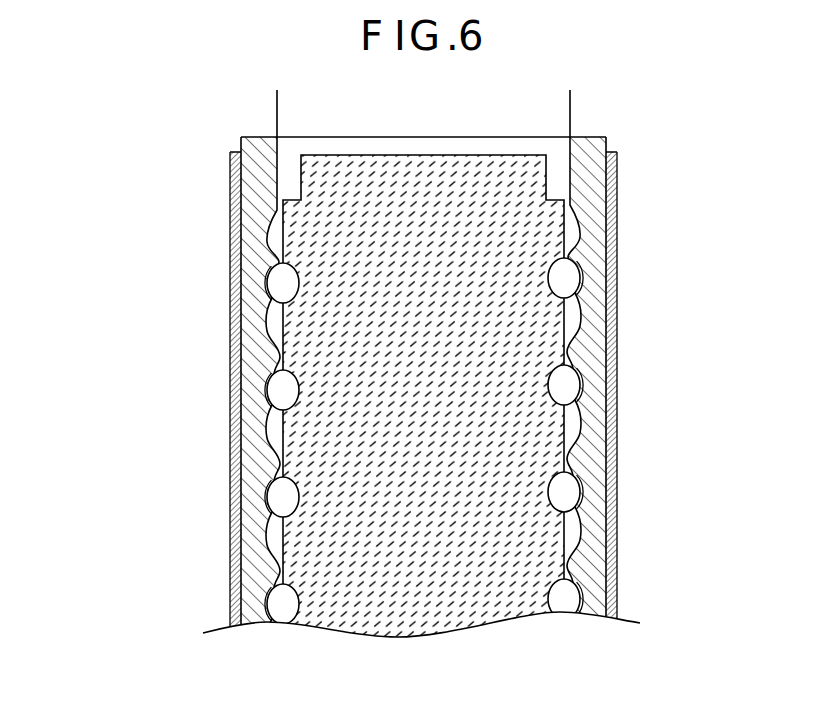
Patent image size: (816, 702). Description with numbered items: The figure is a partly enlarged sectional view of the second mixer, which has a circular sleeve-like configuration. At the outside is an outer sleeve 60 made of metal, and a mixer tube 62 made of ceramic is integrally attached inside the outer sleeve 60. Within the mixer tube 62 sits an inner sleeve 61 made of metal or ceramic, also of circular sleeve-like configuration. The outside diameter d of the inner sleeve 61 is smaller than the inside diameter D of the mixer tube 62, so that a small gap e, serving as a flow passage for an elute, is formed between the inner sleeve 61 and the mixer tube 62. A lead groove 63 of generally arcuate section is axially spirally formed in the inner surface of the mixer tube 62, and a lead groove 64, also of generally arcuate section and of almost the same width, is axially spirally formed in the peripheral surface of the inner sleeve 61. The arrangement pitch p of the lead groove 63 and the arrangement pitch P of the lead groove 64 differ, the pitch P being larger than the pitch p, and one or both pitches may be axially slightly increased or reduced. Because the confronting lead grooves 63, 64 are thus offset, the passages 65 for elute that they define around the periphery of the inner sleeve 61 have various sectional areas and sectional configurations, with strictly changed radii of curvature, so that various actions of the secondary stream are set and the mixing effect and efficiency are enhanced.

The outer sleeve 60 is at (614, 290).
The inner sleeve 61 is at (513, 177).
The mixer tube 62 is at (595, 389).
The lead groove 63 is at (568, 240).
The lead groove 64 is at (300, 267).
The passage 65 is at (275, 285).
The small gap e is at (280, 355).
The arrangement pitch p is at (176, 212).
The arrangement pitch P is at (176, 368).
The inside diameter D is at (570, 137).
The outside diameter d is at (564, 200).